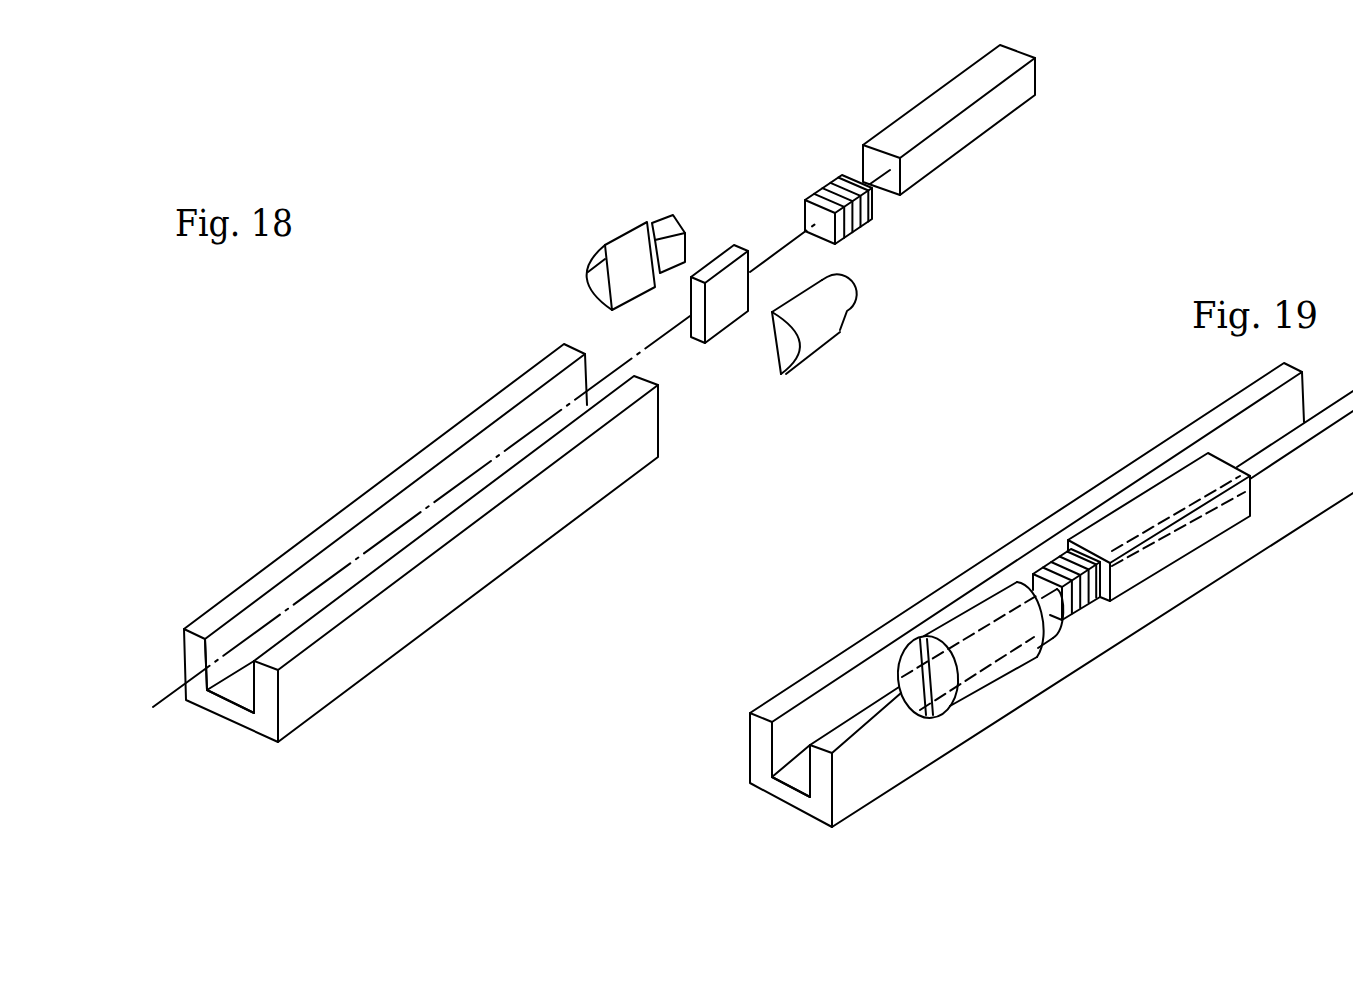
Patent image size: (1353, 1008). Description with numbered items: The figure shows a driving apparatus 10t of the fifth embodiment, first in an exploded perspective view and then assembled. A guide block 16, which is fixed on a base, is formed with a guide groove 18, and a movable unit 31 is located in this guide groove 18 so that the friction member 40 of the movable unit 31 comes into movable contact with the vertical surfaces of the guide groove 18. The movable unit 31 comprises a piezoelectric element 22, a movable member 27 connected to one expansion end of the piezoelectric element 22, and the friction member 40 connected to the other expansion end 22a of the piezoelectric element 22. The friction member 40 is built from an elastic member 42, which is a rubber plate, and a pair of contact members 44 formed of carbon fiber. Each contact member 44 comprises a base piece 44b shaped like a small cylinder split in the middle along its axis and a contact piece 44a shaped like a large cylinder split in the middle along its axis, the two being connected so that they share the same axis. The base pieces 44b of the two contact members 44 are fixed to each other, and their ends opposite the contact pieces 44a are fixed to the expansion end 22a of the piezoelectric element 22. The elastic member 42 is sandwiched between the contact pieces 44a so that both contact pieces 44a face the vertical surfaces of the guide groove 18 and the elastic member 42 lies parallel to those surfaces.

In FIG. 18, the driving apparatus 10t is at (553, 119).
In FIG. 18, the guide block 16 is at (512, 553).
In FIG. 19, the guide block 16 is at (930, 755).
In FIG. 18, the guide groove 18 is at (228, 685).
In FIG. 19, the guide groove 18 is at (787, 743).
In FIG. 18, the piezoelectric element 22 is at (834, 208).
In FIG. 19, the piezoelectric element 22 is at (1057, 557).
In FIG. 18, the expansion end 22a is at (810, 214).
In FIG. 18, the movable member 27 is at (962, 138).
In FIG. 19, the movable member 27 is at (1122, 522).
In FIG. 18, the movable unit 31 is at (1106, 273).
In FIG. 18, the friction member 40 is at (813, 430).
In FIG. 19, the friction member 40 is at (960, 508).
In FIG. 18, the elastic member 42 is at (727, 318).
In FIG. 19, the elastic member 42 is at (943, 623).
In FIG. 18, the contact member 44 is at (704, 306).
In FIG. 19, the contact member 44 is at (935, 615).
In FIG. 18, the contact piece 44a is at (588, 269).
In FIG. 19, the contact piece 44a is at (969, 651).
In FIG. 18, the base piece 44b is at (670, 218).
In FIG. 19, the base piece 44b is at (1050, 618).